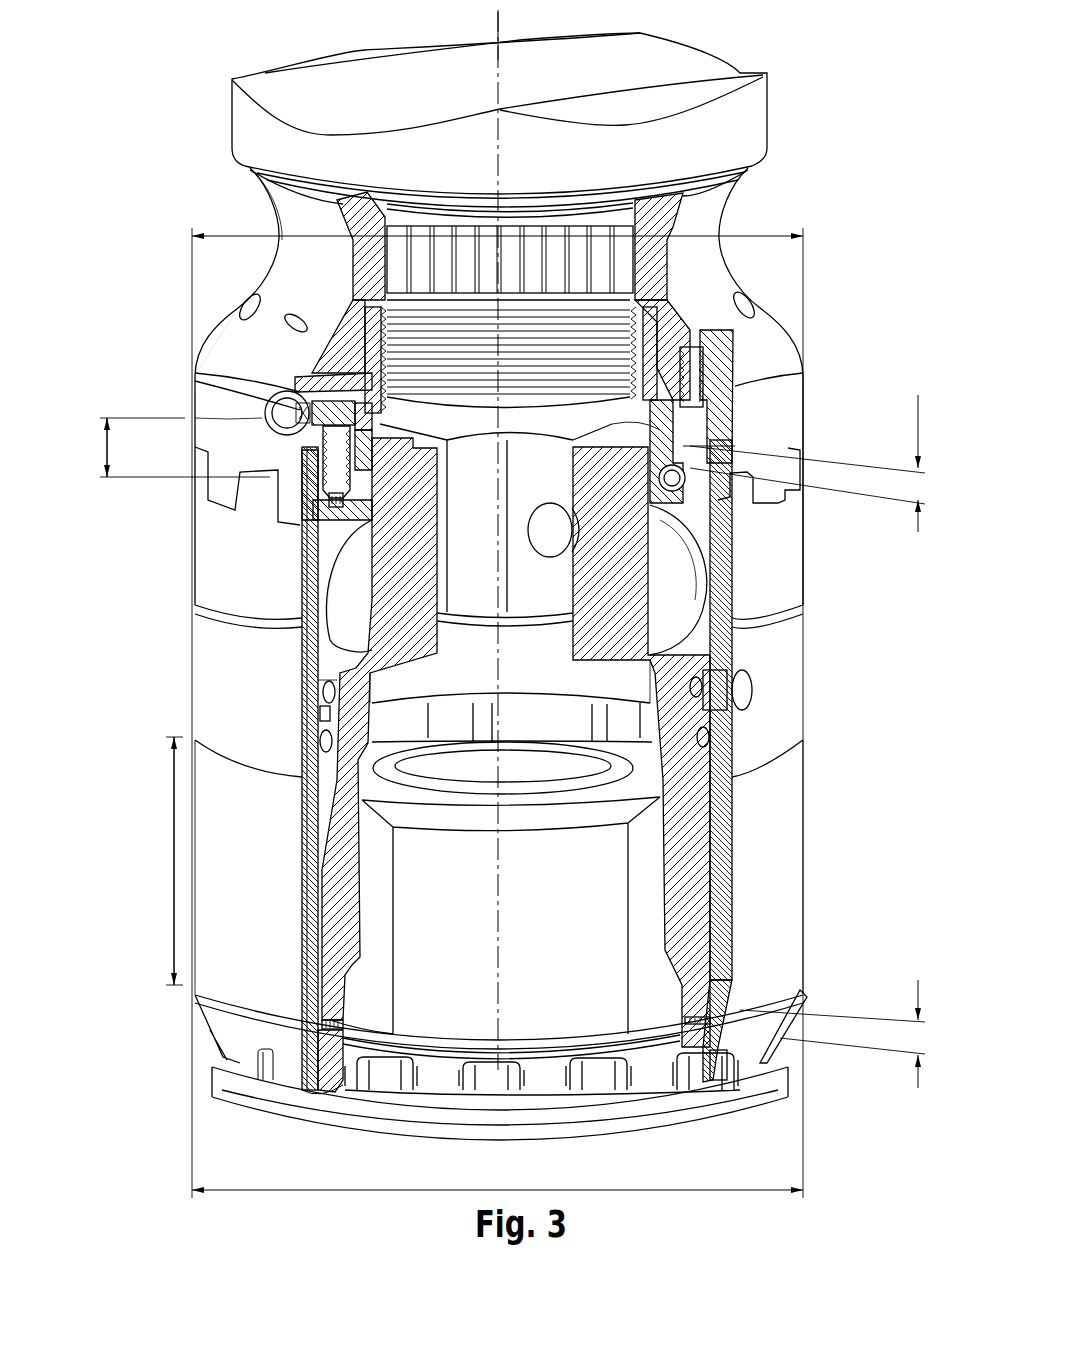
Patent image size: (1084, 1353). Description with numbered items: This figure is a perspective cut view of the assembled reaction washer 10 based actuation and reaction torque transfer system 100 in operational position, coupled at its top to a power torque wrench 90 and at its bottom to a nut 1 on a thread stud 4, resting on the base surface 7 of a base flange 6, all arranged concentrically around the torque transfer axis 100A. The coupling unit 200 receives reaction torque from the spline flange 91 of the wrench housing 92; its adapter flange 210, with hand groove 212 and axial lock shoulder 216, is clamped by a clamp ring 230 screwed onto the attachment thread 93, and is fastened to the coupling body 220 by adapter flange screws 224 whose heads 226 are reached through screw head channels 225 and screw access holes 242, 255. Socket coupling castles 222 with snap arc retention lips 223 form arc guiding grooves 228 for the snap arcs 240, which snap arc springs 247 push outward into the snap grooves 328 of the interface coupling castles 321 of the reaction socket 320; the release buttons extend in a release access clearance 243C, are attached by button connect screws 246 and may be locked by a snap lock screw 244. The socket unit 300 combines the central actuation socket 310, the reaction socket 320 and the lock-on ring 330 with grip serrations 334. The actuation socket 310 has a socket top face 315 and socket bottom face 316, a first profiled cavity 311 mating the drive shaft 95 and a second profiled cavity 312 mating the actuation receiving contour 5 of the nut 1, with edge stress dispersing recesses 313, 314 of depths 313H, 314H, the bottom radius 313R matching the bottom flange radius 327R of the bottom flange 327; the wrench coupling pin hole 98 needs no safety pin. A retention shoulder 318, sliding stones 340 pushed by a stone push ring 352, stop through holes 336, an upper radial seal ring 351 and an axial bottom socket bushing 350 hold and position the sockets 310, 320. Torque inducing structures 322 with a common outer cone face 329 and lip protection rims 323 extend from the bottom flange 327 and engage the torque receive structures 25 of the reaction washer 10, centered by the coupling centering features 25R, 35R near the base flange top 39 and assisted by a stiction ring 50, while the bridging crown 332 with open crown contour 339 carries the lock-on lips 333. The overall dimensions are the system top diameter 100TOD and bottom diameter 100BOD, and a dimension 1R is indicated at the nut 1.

The power torque wrench 90 is at (181, 96).
The actuation and reaction torque transfer system 100 is at (148, 160).
The torque transfer axis 100A is at (499, 52).
The torque wrench housing 92 is at (763, 123).
The spline flange 91 is at (600, 258).
The attachment thread 93 is at (683, 300).
The hand groove 212 is at (276, 218).
The axial lock shoulder 216 is at (350, 298).
The coupling unit 200 is at (128, 262).
The clamp ring 230 is at (335, 340).
The snap lock screw 244 is at (300, 381).
The adapter flange 210 is at (213, 343).
The screw access hole 242 is at (285, 405).
The coupling body 220 is at (262, 418).
The release access clearance 243C is at (174, 441).
The button connect screw 246 is at (330, 452).
The socket coupling castles 222 is at (220, 482).
The interface coupling castles 321 is at (318, 471).
The snap arcs 240 is at (355, 494).
The arc guiding grooves 228 is at (372, 503).
The snap arc retention lip 223 is at (380, 538).
The first profiled cavity 311 is at (282, 605).
The reaction socket 320 is at (365, 570).
The actuation socket 310 is at (400, 638).
The socket unit 300 is at (130, 755).
The grip serrations 334 is at (162, 861).
The second profiled cavity 312 is at (420, 718).
The lock-on ring 330 is at (209, 881).
The edge stress dispersing bottom recess 313 is at (335, 1003).
The outer cone face 329 is at (300, 1033).
The torque inducing structures 322 is at (300, 1056).
The open crown contour 339 is at (259, 1067).
The bridging crown 332 is at (300, 1075).
The lock-on lips 333 is at (305, 1078).
The lip protection rims 323 is at (338, 1097).
The base flange top 39 is at (470, 1060).
The torque receive structures 25 is at (493, 1085).
The stiction ring 50 is at (543, 1095).
The base centering feature 35R is at (587, 1065).
The outer centering feature 25R is at (607, 1068).
The reaction washer 10 is at (645, 1075).
The base flange 6 is at (725, 1108).
The base surface 7 is at (770, 1100).
The bottom flange 327 is at (730, 1052).
The axial bottom socket bushing 350 is at (725, 1024).
The socket bottom face 316 is at (708, 1000).
The stress dispersion recess depth 313H is at (832, 1007).
The actuation receiving structure 1 is at (632, 858).
The actuation receiving contour 5 is at (598, 877).
The thread stud 4 is at (545, 771).
The upper radial seal ring 351 is at (727, 723).
The retention shoulder 318 is at (733, 773).
The sliding stones 340 is at (713, 697).
The stone push ring 352 is at (700, 673).
The stop through holes 336 is at (752, 694).
The coupling pin hole 98 is at (705, 582).
The screw access hole 255 is at (573, 543).
The snap grooves 328 is at (680, 493).
The snap arc springs 247 is at (693, 481).
The edge stress dispersing top recess 314 is at (735, 446).
The stress dispersion recess depth 314H is at (807, 463).
The screw head channels 225 is at (690, 433).
The socket top face 315 is at (640, 430).
The screw heads 226 is at (688, 408).
The drive shaft 95 is at (692, 362).
The adapter flange screws 224 is at (702, 342).
The overall system top diameter 100TOD is at (561, 704).
The overall system bottom diameter 100BOD is at (563, 1182).
The hex body radius 1R is at (628, 930).
The radius of bottom recess 313R is at (677, 998).
The bottom flange radius 327R is at (677, 1030).